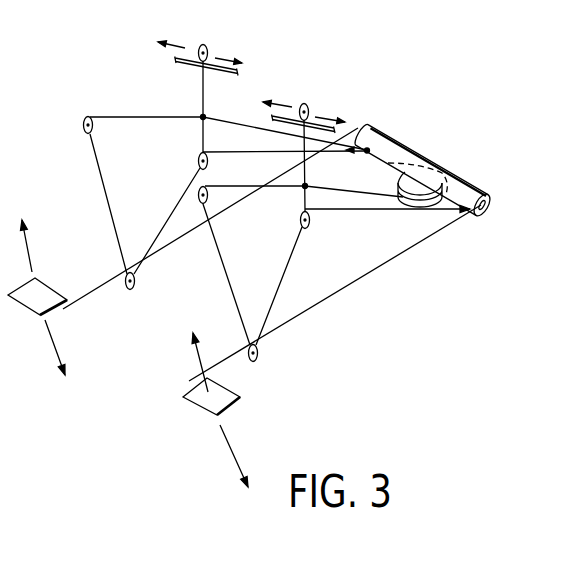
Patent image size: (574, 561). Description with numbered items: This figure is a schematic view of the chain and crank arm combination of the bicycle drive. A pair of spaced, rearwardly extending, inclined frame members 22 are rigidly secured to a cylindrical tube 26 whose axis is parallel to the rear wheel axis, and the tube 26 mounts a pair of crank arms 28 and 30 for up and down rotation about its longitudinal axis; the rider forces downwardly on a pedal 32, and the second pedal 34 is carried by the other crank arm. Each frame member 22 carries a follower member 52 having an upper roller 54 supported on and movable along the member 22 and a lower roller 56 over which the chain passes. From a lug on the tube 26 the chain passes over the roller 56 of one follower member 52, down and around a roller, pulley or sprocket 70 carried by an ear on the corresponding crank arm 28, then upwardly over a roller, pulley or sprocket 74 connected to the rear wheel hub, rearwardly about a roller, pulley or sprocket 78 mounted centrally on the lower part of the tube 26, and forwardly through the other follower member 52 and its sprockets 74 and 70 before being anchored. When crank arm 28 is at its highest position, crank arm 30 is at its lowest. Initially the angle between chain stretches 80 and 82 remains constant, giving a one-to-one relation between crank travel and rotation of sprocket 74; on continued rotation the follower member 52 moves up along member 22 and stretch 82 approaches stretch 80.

The frame member 22 is at (174, 57).
The cylindrical tube 26 is at (397, 140).
The crank arm 28 is at (313, 304).
The crank arm 30 is at (100, 294).
The pedal 32 is at (235, 396).
The platform 34 is at (40, 291).
The follower member 52 is at (207, 103).
The upper roller 54 is at (210, 48).
The lower roller 56 is at (200, 160).
The roller pulley or sprocket 70 is at (137, 286).
The roller, pulley or sprocket 74 is at (93, 126).
The roller, pulley or sprocket 78 is at (407, 203).
The chain stretch 80 is at (97, 183).
The chain stretch 82 is at (162, 230).